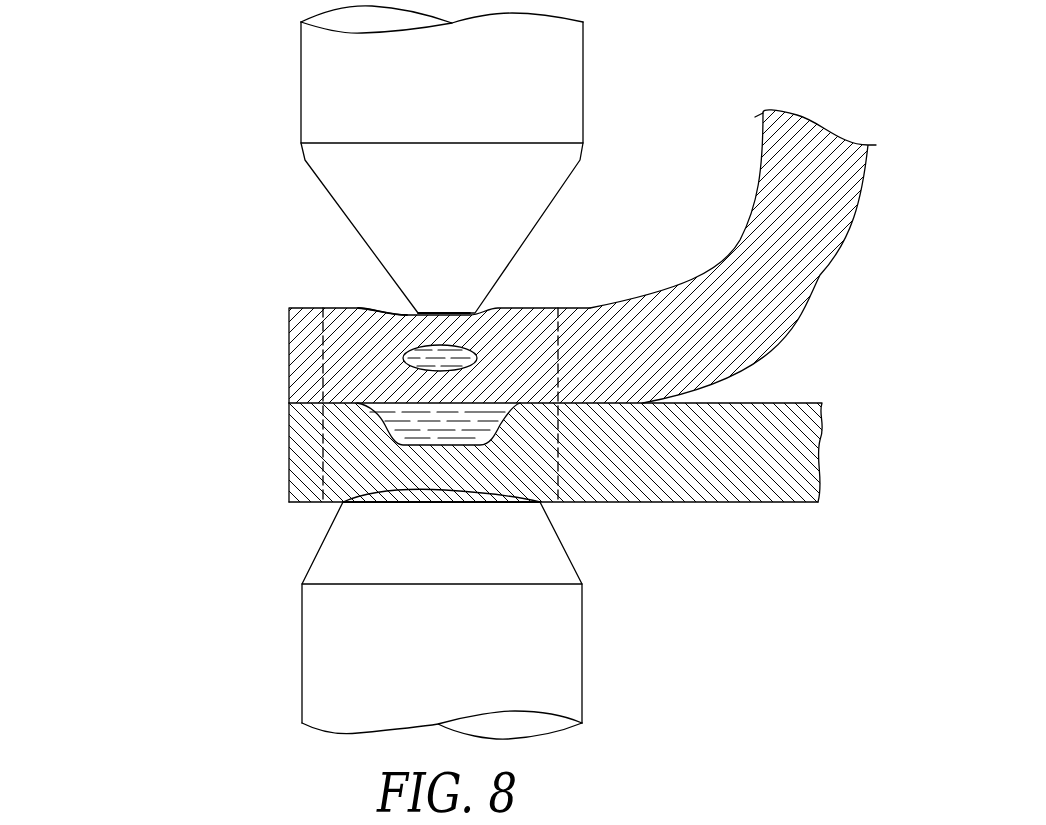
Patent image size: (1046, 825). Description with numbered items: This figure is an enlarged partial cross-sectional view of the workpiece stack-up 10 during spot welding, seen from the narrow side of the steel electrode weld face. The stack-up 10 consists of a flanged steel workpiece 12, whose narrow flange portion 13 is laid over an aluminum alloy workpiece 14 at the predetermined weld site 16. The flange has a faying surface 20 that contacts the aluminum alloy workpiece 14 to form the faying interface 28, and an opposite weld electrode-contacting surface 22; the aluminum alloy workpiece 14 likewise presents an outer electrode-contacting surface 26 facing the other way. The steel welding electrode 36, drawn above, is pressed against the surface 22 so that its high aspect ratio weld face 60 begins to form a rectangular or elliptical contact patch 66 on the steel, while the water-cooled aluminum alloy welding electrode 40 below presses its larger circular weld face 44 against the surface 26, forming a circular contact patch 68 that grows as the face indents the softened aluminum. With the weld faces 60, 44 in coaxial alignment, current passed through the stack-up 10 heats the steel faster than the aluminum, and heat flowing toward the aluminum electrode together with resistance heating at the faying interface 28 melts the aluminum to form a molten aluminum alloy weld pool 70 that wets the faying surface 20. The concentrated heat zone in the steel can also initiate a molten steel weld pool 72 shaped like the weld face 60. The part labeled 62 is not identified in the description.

The workpiece stack-up 10 is at (250, 347).
The steel workpiece 12 is at (523, 301).
The narrow flange portion 13 is at (307, 307).
The aluminum alloy workpiece 14 is at (558, 492).
The weld site 16 is at (560, 343).
The faying surface 20 is at (377, 425).
The weld electrode-contacting surface 22 is at (596, 307).
The electrode-contacting surface 26 is at (720, 503).
The faying interface 28 is at (303, 403).
The steel welding electrode 36 is at (436, 159).
The aluminum alloy welding electrode 40 is at (503, 614).
The weld face 44 is at (467, 503).
The weld face 60 is at (413, 330).
The tapered body of first electrode 62 is at (337, 203).
The steel contact patch 66 is at (432, 318).
The aluminum alloy contact patch 68 is at (467, 505).
The molten aluminum alloy weld pool 70 is at (400, 432).
The molten steel weld pool 72 is at (453, 357).